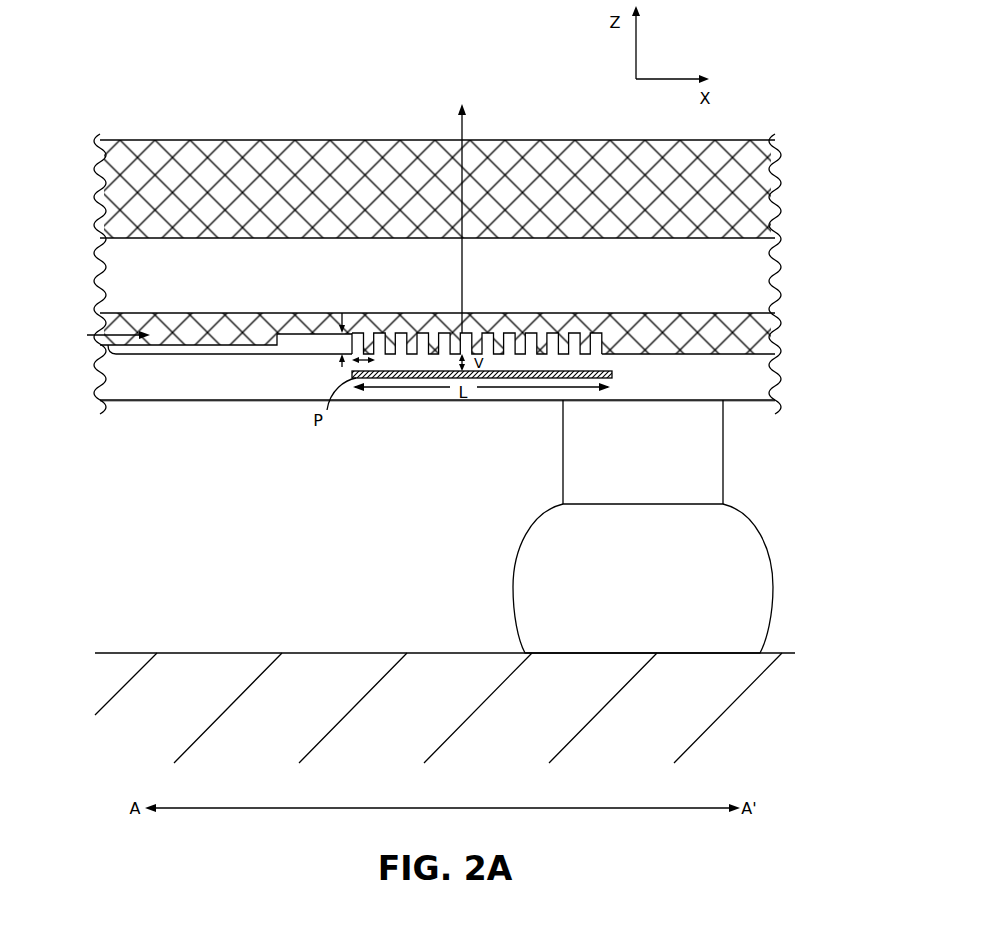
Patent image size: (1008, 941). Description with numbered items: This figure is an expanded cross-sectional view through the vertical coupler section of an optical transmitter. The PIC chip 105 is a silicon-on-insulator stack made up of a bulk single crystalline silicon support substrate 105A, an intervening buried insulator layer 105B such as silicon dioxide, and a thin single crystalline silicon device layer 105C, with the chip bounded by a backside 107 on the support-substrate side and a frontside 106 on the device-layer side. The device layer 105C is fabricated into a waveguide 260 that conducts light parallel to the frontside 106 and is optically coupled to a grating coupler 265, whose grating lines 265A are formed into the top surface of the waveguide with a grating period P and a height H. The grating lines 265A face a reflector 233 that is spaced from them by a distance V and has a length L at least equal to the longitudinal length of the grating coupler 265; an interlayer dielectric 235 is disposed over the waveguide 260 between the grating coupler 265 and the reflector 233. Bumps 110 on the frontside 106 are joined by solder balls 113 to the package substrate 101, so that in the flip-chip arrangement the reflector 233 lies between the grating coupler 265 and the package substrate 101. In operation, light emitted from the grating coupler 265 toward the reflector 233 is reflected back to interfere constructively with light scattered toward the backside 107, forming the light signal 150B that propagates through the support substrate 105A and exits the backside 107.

The package substrate 101 is at (364, 749).
The PIC chip 105 is at (90, 140).
The support substrate 105A is at (196, 194).
The insulator layer 105B is at (196, 284).
The device layer 105C is at (196, 339).
The frontside 106 is at (292, 402).
The backside 107 is at (229, 140).
The bumps 110 is at (629, 461).
The solder balls 113 is at (623, 593).
The light signal 150B is at (459, 133).
The reflector 233 is at (612, 375).
The interlayer dielectric 235 is at (136, 387).
The waveguide 260 is at (112, 353).
The grating coupler 265 is at (343, 303).
The grating lines 265A is at (354, 343).